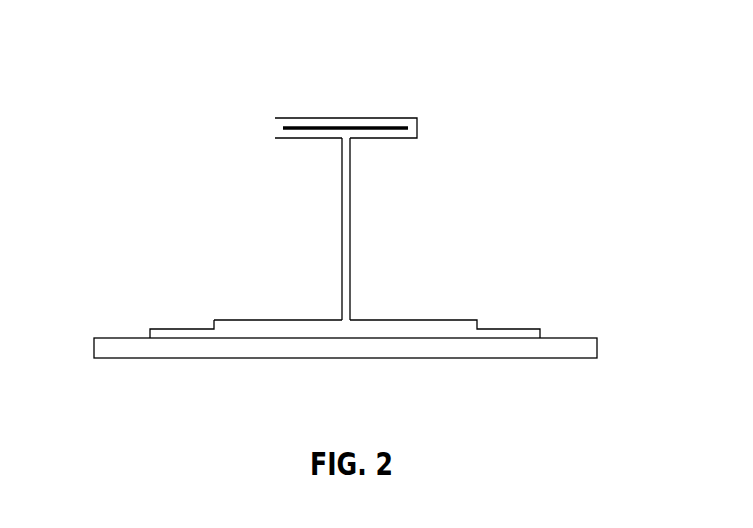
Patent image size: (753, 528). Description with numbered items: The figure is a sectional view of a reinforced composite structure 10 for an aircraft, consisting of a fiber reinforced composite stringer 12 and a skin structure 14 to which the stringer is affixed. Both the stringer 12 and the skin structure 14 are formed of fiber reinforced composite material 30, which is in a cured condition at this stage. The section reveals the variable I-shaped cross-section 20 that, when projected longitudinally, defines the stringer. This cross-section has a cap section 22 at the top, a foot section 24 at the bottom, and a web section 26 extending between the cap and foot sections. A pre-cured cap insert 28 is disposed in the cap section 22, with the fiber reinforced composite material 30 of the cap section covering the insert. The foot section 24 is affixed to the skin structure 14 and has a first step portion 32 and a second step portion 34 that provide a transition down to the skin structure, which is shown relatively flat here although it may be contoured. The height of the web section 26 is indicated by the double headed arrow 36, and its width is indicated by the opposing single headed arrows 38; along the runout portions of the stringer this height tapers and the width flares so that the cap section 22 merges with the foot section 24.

The reinforced composite structure 10 is at (124, 58).
The fiber reinforced composite stringer 12 is at (417, 128).
The skin structure 14 is at (597, 346).
The variable I-shaped cross-section 20 is at (308, 118).
The cap section 22 is at (283, 140).
The foot section 24 is at (433, 320).
The web section 26 is at (342, 240).
The pre-cured cap insert 28 is at (402, 139).
The fiber reinforced composite material 30 is at (390, 118).
The first step portion 32 is at (295, 315).
The second step portion 34 is at (191, 322).
The double headed arrow 36 is at (382, 144).
The opposing single headed arrows 38 is at (356, 276).